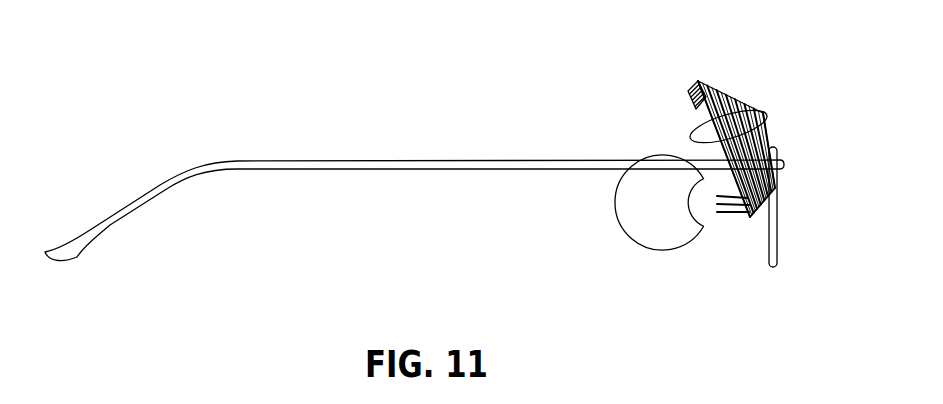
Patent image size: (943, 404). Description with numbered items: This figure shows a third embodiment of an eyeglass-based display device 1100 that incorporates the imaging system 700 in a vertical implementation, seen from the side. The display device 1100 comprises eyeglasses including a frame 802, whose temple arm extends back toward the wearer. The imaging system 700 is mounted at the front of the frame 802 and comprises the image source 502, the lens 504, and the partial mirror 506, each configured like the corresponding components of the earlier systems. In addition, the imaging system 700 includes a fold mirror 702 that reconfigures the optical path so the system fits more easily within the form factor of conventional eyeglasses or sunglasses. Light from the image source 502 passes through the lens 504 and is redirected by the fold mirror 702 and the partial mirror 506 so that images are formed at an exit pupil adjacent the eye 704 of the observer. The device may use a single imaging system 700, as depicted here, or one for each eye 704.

The eyeglass-based display device 1100 is at (362, 82).
The imaging system 700 is at (700, 155).
The fold mirror 702 is at (728, 96).
The image source 502 is at (695, 100).
The lens 504 is at (703, 137).
The partial mirror 506 is at (750, 216).
The eye 704 is at (681, 211).
The frame 802 is at (782, 163).